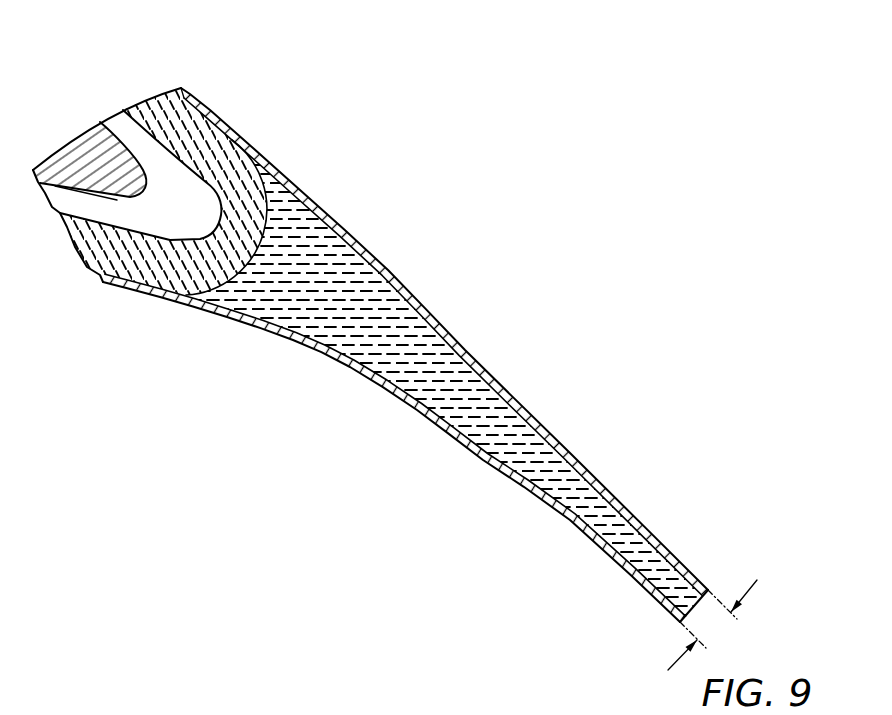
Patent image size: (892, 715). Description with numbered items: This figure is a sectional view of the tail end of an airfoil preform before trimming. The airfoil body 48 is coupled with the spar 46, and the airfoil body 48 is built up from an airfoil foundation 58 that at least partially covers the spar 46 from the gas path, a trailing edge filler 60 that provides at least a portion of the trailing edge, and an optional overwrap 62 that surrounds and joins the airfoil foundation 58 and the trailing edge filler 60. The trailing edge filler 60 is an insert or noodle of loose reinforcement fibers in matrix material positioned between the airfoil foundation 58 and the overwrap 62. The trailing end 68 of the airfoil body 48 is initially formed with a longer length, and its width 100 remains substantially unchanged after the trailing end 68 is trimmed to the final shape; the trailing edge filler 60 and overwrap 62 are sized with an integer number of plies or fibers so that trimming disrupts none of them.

The spar 46 is at (67, 160).
The airfoil body 48 is at (211, 94).
The airfoil foundation 58 is at (217, 170).
The trailing edge filler 60 is at (340, 277).
The overwrap 62 is at (283, 177).
The trailing end 68 is at (626, 486).
The width 100 is at (752, 584).